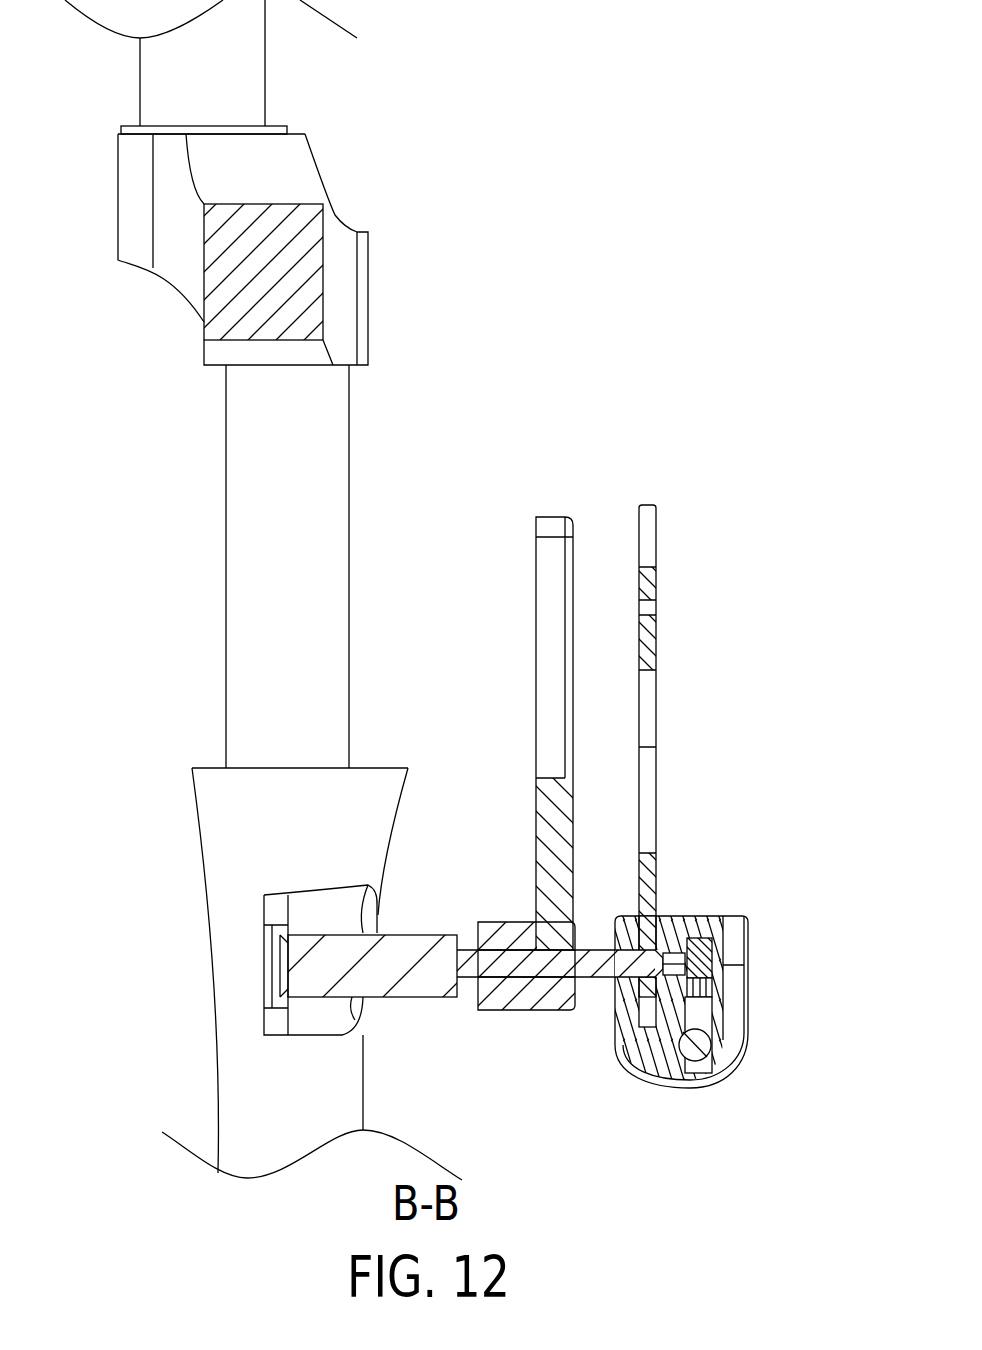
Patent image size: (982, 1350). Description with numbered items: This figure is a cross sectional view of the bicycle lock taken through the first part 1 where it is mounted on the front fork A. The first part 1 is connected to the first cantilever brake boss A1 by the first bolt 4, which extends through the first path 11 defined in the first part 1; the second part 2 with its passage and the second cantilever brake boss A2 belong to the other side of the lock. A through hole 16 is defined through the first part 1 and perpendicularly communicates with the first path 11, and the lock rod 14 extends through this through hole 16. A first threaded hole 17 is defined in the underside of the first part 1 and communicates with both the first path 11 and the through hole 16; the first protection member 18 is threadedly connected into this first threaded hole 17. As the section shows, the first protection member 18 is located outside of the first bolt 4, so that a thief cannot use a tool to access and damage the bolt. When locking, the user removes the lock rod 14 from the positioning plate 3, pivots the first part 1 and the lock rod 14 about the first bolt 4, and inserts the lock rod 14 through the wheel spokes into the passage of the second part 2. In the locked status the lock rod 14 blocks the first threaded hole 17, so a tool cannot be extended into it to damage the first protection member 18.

The front fork A is at (278, 168).
The first cantilever brake boss A1 is at (461, 935).
The second cantilever brake boss A2 is at (548, 553).
The first part 1 is at (625, 1047).
The second part 2 is at (737, 930).
The positioning plate 3 is at (648, 517).
The first bolt 4 is at (665, 948).
The first path 11 is at (715, 962).
The lock rod 14 is at (707, 1057).
The through hole 16 is at (690, 1058).
The first threaded hole 17 is at (698, 1013).
The first protection member 18 is at (698, 955).